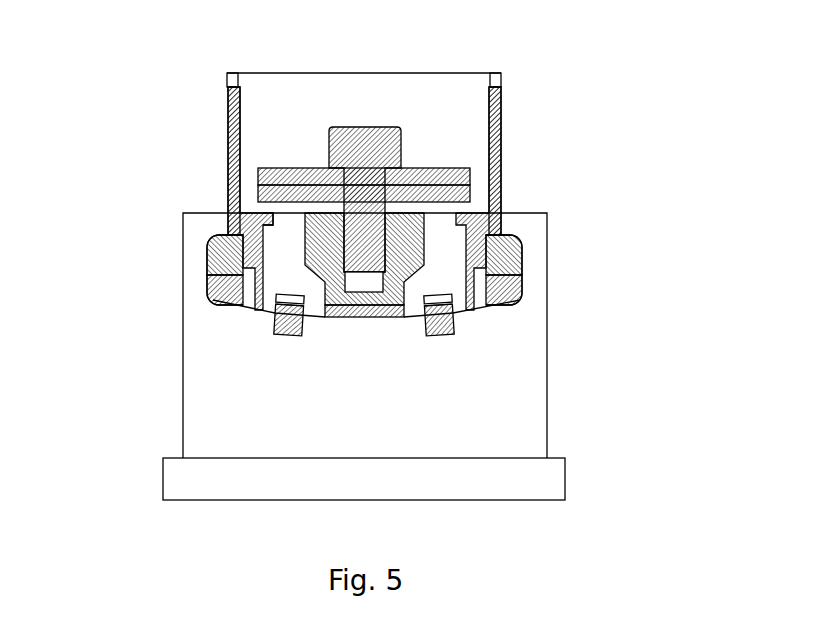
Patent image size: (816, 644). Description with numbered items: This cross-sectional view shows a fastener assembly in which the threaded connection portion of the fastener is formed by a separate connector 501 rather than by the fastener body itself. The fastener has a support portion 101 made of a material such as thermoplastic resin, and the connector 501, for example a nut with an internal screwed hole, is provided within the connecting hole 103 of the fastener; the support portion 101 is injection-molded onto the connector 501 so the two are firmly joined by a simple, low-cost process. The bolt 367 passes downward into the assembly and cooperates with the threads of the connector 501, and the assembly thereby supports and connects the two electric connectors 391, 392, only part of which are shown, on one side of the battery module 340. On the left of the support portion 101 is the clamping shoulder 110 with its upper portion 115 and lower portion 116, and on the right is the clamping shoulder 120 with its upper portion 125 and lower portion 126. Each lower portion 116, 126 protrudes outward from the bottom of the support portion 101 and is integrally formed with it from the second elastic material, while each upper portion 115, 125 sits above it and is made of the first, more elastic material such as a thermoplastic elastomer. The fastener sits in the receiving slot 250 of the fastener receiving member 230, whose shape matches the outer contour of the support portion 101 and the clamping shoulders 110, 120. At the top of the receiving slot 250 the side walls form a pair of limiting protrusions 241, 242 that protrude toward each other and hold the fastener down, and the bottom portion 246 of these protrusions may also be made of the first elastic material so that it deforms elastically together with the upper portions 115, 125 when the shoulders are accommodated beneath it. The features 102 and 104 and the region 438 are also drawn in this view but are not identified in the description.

The support portion 101 is at (245, 253).
The holding lip 102 is at (262, 217).
The connecting hole 103 is at (365, 287).
The support block 104 is at (290, 333).
The clamping shoulder 110 is at (208, 275).
The upper portion 115 is at (208, 248).
The lower portion 116 is at (215, 295).
The clamping shoulder 120 is at (520, 287).
The upper portion 125 is at (513, 262).
The lower portion 126 is at (517, 300).
The fastener receiving member 230 is at (518, 430).
The limiting protrusion 241 is at (215, 222).
The limiting protrusion 242 is at (507, 225).
The bottom portion of the limiting protrusions 246 is at (230, 240).
The receiving slot 250 is at (255, 308).
The battery module 340 is at (523, 485).
The bolt 367 is at (360, 127).
The electric connector 391 is at (282, 175).
The electric connector 392 is at (263, 190).
The cavity 438 is at (447, 233).
The connector 501 is at (400, 317).